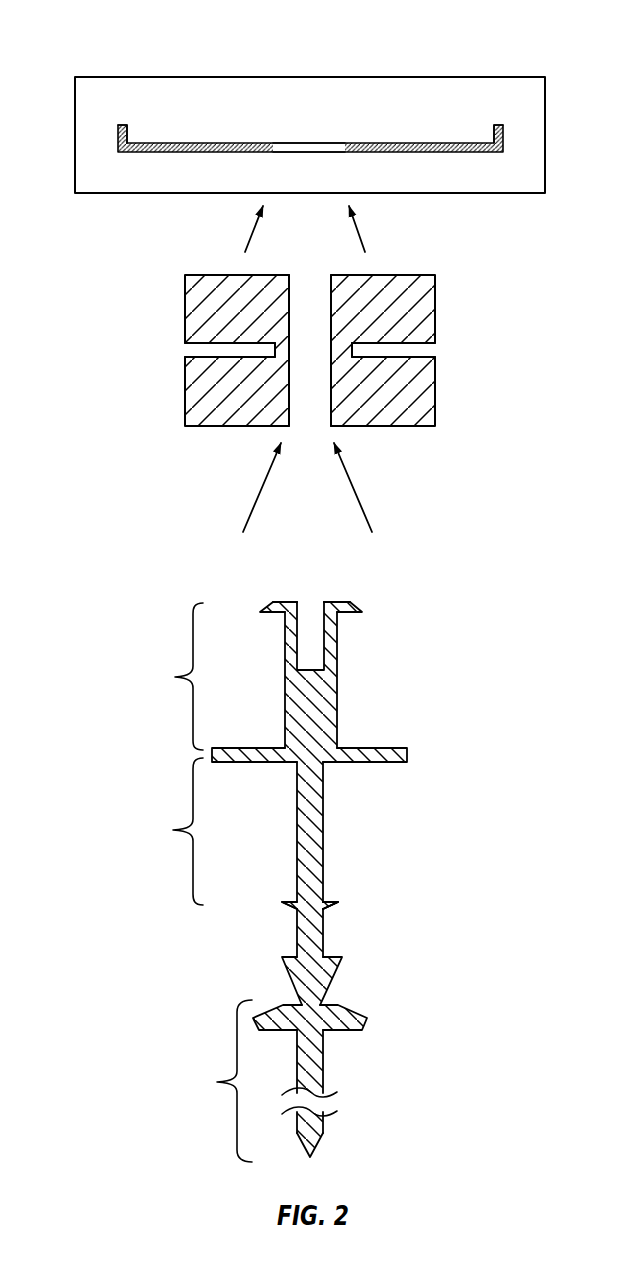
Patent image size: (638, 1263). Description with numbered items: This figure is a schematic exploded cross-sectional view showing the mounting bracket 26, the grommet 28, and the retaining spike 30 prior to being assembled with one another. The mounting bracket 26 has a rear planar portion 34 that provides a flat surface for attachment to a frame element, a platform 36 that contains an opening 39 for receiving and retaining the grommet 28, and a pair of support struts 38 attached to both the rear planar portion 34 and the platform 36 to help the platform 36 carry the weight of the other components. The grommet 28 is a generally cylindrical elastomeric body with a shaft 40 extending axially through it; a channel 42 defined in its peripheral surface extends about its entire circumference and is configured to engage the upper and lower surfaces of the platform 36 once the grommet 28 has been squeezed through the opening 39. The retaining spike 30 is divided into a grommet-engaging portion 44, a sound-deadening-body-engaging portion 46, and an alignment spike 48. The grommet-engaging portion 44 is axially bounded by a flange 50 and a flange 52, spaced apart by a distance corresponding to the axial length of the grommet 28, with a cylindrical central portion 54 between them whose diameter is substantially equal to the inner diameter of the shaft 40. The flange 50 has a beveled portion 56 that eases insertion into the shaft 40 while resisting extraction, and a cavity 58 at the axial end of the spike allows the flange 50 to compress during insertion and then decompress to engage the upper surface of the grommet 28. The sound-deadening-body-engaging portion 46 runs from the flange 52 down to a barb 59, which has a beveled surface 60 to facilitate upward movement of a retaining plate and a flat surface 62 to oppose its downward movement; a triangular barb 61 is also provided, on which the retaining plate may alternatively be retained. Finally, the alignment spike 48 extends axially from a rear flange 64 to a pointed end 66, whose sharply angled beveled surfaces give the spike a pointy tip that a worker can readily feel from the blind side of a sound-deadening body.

The mounting bracket 26 is at (310, 96).
The grommet 28 is at (310, 324).
The retaining spike 30 is at (308, 867).
The rear planar portion 34 is at (447, 88).
The platform 36 is at (167, 142).
The support struts 38 is at (122, 124).
The opening 39 is at (305, 142).
The shaft 40 is at (311, 294).
The channel 42 is at (202, 352).
The grommet-engaging portion 44 is at (175, 676).
The sound-deadening-body-engaging portion 46 is at (175, 831).
The alignment spike 48 is at (222, 1081).
The flange 50 is at (347, 603).
The flange 52 is at (407, 755).
The cylindrical central portion 54 is at (337, 698).
The beveled portion 56 is at (262, 607).
The cavity 58 is at (309, 616).
The barb 59 is at (334, 912).
The beveled surface 60 is at (290, 907).
The triangular barb 61 is at (341, 977).
The flat surface 62 is at (293, 900).
The rear flange 64 is at (367, 1018).
The pointed end 66 is at (313, 1160).